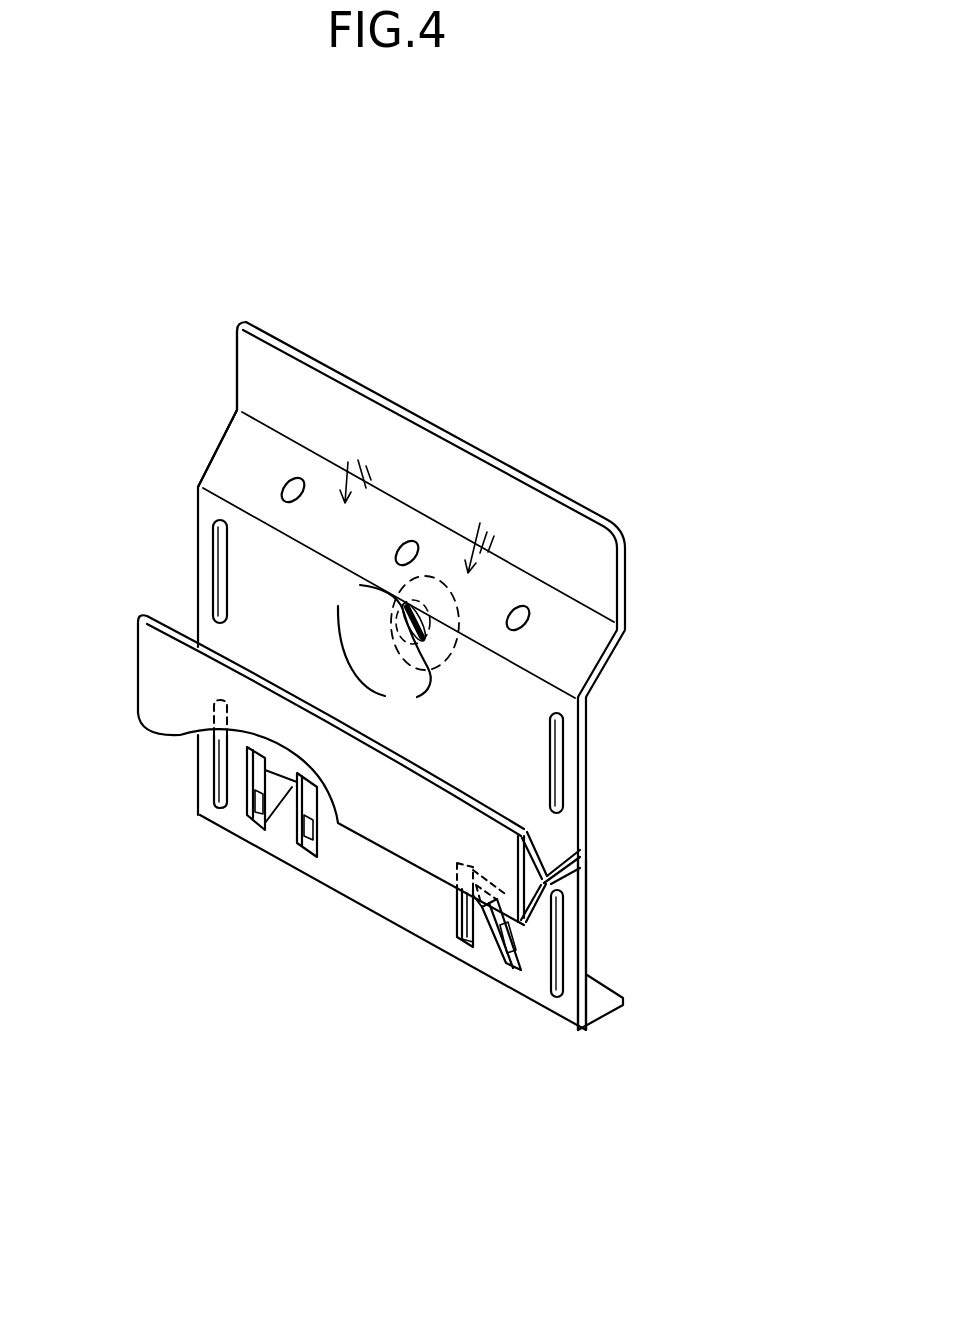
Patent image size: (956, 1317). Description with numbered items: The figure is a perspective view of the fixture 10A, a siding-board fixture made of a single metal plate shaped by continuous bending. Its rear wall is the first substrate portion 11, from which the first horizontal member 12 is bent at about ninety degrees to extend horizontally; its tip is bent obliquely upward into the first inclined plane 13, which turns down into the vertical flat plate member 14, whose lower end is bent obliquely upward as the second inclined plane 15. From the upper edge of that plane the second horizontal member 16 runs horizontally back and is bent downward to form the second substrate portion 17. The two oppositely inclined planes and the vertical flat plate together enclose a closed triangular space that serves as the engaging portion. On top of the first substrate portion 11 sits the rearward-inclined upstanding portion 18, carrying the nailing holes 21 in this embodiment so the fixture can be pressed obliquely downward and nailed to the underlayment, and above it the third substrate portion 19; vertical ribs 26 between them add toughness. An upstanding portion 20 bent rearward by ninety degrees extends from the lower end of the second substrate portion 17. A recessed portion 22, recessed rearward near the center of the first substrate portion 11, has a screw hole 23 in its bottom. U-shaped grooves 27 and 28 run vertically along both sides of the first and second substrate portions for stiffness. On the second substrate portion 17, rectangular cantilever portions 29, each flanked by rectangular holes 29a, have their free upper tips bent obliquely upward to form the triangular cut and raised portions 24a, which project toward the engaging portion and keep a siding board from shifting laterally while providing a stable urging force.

The fixture 10A is at (706, 324).
The first substrate portion 11 is at (263, 540).
The first horizontal member 12 is at (542, 840).
The first inclined plane 13 is at (551, 848).
The vertical flat plate member 14 is at (410, 823).
The second inclined plane 15 is at (586, 942).
The second horizontal member 16 is at (565, 883).
The second substrate portion 17 is at (383, 897).
The upstanding portion 18 is at (232, 450).
The third substrate portion 19 is at (592, 562).
The upstanding portion 20 is at (598, 1000).
The nailing hole 21 is at (288, 478).
The recessed portion 22 is at (368, 640).
The screw hole 23 is at (433, 577).
The cut and raised portion 24a is at (315, 782).
The rib 26 is at (348, 460).
The U-shaped groove 27 is at (218, 563).
The U-shaped groove 28 is at (220, 763).
The cantilever portion 29 is at (283, 830).
The rectangular hole 29a is at (253, 810).